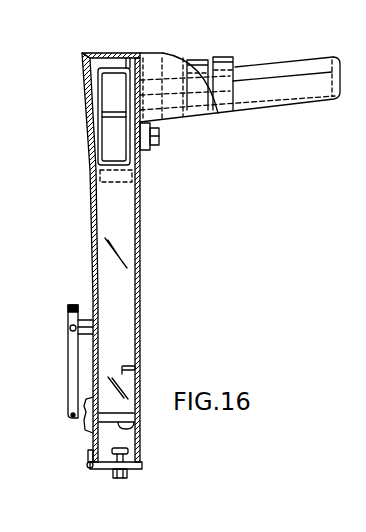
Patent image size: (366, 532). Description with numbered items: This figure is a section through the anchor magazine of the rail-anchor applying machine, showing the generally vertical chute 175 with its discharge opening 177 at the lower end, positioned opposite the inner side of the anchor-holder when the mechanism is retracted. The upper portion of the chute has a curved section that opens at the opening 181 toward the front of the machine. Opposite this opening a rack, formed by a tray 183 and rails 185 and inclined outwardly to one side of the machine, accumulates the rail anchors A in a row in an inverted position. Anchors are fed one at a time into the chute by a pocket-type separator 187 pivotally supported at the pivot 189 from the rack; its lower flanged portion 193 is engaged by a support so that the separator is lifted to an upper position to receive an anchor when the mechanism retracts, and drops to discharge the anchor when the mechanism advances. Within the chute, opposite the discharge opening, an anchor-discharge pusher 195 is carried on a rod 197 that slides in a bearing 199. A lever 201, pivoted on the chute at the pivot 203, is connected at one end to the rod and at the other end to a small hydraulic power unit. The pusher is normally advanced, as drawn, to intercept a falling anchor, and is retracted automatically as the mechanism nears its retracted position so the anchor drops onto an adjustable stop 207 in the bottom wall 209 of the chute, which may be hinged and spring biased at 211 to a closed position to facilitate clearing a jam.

The chute 175 is at (140, 272).
The discharge opening 177 is at (142, 370).
The opening 181 is at (82, 73).
The tray 183 is at (282, 98).
The rails 185 is at (273, 66).
The pocket-type separator 187 is at (98, 118).
The pivot 189 is at (160, 137).
The lower flanged portion 193 is at (120, 182).
The anchor-discharge pusher 195 is at (137, 379).
The rod 197 is at (136, 429).
The bearing 199 is at (92, 443).
The lever 201 is at (68, 355).
The pivot 203 is at (70, 328).
The adjustable stop 207 is at (128, 460).
The bottom wall 209 is at (137, 470).
The hinge and spring bias 211 is at (92, 468).
The rail anchors A is at (216, 57).